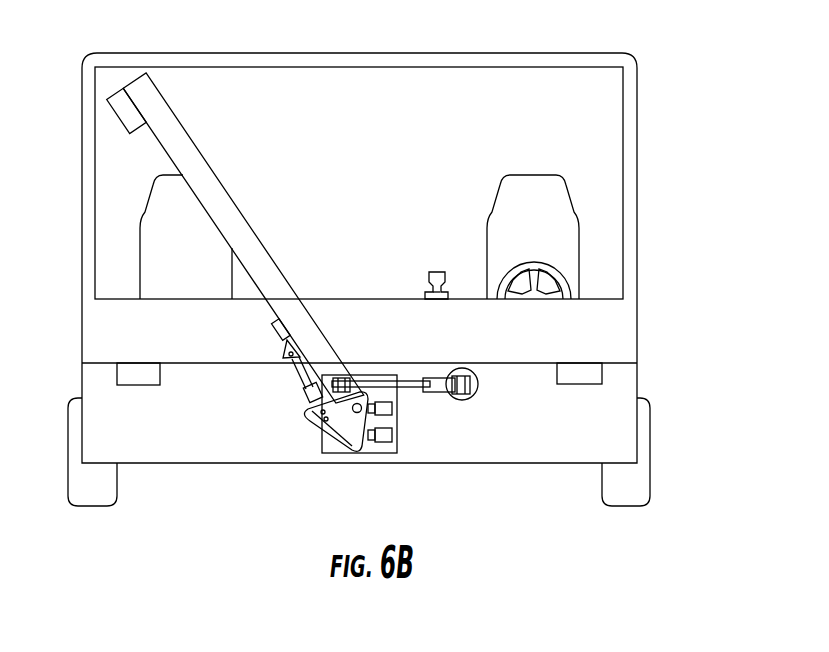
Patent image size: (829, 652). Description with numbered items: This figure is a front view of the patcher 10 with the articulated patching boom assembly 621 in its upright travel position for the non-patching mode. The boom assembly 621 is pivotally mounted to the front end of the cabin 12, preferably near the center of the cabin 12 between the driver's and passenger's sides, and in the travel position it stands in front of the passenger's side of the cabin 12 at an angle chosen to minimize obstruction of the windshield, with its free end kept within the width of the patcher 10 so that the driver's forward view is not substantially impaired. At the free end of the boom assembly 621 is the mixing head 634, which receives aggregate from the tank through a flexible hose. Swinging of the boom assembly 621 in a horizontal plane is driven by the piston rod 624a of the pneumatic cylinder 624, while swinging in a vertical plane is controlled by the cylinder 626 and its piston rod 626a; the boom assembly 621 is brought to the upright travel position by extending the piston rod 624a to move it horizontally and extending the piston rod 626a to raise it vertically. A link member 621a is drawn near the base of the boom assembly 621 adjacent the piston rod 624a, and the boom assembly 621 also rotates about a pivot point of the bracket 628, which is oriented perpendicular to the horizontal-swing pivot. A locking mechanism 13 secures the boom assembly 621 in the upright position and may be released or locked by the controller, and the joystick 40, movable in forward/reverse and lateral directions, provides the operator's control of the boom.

The patcher 10 is at (660, 88).
The cabin 12 is at (602, 347).
The locking mechanism 13 is at (273, 328).
The joystick 40 is at (437, 272).
The articulated patching boom assembly 621 is at (222, 178).
The link rod 621a is at (348, 378).
The pneumatic cylinder 624 is at (438, 390).
The piston rod 624a is at (408, 383).
The cylinder 626 is at (280, 399).
The piston rod 626a is at (302, 382).
The bracket 628 is at (362, 442).
The mixing head 634 is at (123, 112).